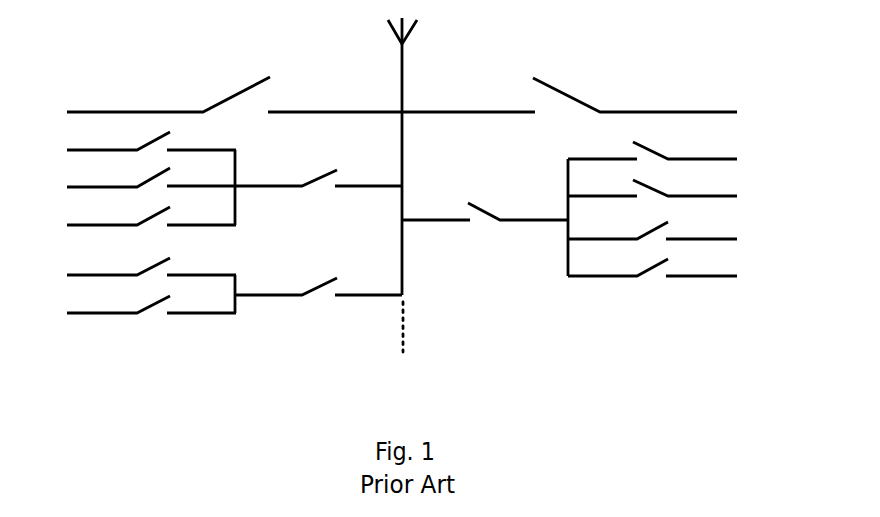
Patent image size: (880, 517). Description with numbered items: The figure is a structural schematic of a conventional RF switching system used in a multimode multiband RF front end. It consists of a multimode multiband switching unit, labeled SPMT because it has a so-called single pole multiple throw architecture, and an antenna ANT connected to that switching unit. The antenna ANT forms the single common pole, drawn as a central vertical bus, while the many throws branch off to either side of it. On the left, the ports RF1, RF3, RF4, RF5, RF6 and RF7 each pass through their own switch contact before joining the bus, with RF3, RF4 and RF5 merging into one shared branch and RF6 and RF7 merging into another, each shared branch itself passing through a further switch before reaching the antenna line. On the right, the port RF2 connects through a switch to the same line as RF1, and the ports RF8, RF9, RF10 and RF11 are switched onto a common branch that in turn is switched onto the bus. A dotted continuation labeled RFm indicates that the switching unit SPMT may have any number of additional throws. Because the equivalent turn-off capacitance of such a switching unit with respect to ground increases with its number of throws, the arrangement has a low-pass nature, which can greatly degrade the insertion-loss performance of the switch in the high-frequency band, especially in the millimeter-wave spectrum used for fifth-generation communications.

The antenna ANT is at (429, 156).
The RF port 1 RF1 is at (216, 98).
The RF port 2 RF2 is at (590, 99).
The RF port 3 RF3 is at (133, 145).
The RF port 4 RF4 is at (216, 187).
The RF port 5 RF5 is at (133, 220).
The RF port 6 RF6 is at (216, 285).
The RF port 7 RF7 is at (133, 308).
The RF port 8 RF8 is at (591, 209).
The RF port 9 RF9 is at (676, 192).
The RF port 10 RF10 is at (679, 234).
The RF port 11 RF11 is at (677, 271).
The RF port m RFm is at (430, 327).
The single pole multiple throw switching unit SPMT is at (402, 373).